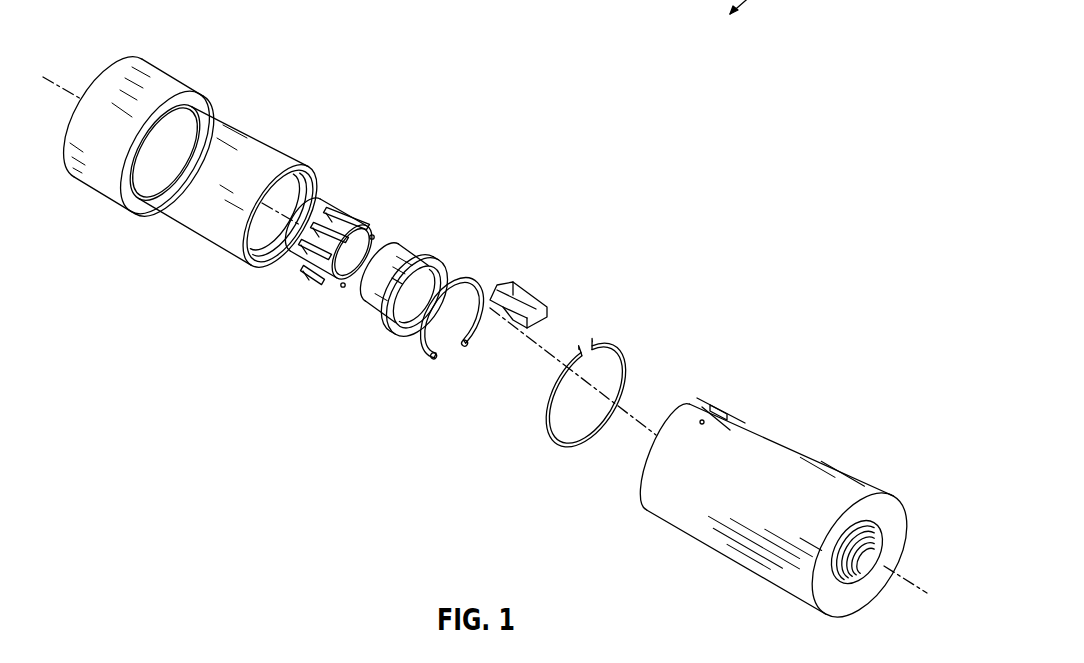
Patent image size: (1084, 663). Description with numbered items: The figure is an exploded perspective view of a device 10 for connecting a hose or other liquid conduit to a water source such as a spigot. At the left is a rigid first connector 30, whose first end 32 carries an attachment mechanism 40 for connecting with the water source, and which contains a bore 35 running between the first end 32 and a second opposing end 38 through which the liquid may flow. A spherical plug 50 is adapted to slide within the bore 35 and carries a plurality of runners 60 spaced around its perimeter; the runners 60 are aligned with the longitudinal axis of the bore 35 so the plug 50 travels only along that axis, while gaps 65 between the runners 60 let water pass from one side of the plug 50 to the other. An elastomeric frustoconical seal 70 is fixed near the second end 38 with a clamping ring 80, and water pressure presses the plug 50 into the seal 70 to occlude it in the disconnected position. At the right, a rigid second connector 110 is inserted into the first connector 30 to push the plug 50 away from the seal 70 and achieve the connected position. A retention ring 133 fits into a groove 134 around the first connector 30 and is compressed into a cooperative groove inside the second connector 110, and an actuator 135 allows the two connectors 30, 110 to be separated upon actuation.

The device 10 is at (769, 7).
The first connector 30 is at (176, 87).
The first end 32 is at (102, 70).
The bore 35 is at (305, 201).
The second opposing end 38 is at (247, 250).
The attachment mechanism 40 is at (868, 547).
The spherical plug 50 is at (335, 268).
The runners 60 is at (358, 212).
The gaps 65 is at (330, 240).
The frustoconical seal 70 is at (415, 258).
The clamping ring 80 is at (458, 278).
The second connector 110 is at (775, 440).
The retention ring 133 is at (595, 340).
The groove 134 is at (210, 112).
The actuator 135 is at (523, 288).